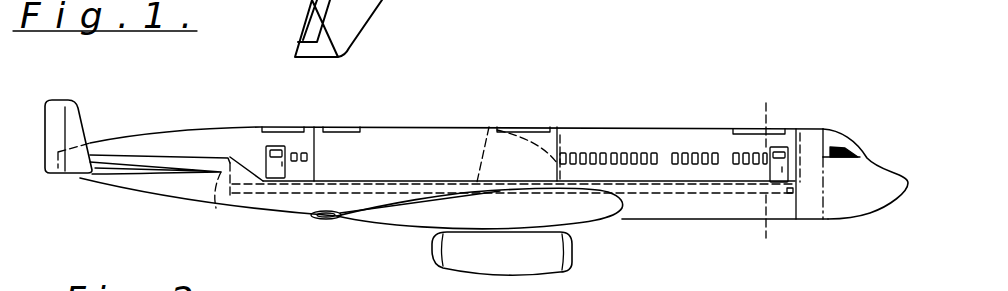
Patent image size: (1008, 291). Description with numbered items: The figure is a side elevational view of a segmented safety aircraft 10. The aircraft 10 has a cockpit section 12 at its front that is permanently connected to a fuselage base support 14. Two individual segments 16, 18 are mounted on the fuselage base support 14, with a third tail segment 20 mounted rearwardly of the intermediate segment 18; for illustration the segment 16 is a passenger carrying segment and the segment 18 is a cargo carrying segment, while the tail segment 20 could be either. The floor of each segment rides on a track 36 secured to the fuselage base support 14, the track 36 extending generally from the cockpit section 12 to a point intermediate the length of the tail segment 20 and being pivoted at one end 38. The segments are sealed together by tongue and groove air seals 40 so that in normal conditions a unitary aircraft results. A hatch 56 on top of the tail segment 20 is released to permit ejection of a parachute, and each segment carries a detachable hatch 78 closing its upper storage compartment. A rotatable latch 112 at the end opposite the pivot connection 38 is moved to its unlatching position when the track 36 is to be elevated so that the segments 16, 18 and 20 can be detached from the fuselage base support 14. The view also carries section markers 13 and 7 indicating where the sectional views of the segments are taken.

The segmented safety aircraft 10 is at (600, 87).
The cockpit section 12 is at (860, 198).
The fuselage base support 14 is at (677, 207).
The passenger carrying segment 16 is at (674, 110).
The cargo carrying segment 18 is at (415, 140).
The tail segment 20 is at (182, 147).
The track 36 is at (272, 186).
The pivot connection 38 is at (790, 194).
The tongue and groove air seals 40 is at (515, 118).
The hatch 56 is at (285, 127).
The hatch 78 is at (365, 128).
The rotatable latch 112 is at (210, 218).
The section line 13- 13 is at (358, 243).
The section line 7- 7 is at (712, 89).